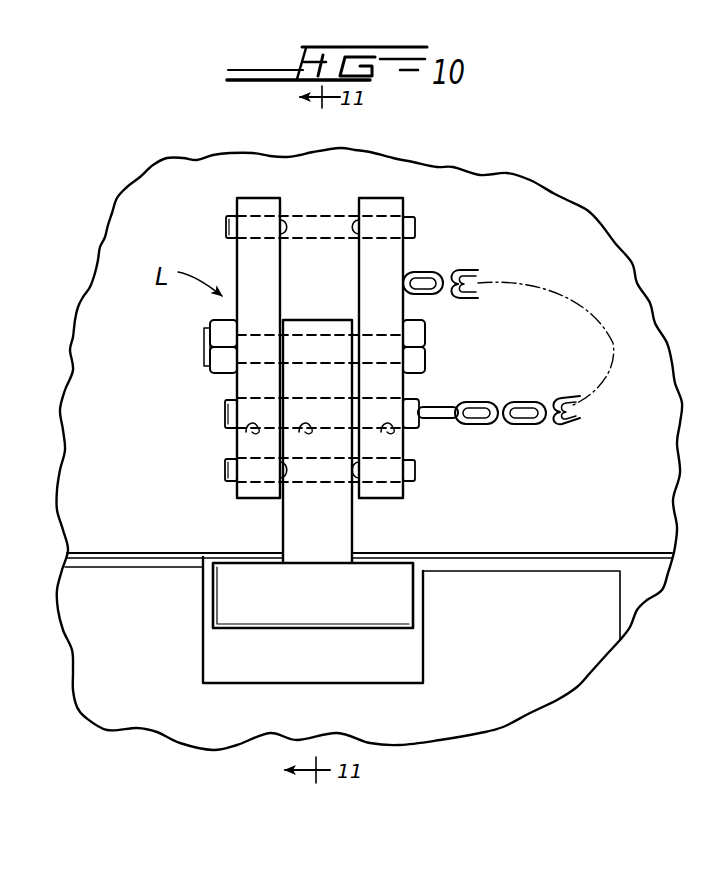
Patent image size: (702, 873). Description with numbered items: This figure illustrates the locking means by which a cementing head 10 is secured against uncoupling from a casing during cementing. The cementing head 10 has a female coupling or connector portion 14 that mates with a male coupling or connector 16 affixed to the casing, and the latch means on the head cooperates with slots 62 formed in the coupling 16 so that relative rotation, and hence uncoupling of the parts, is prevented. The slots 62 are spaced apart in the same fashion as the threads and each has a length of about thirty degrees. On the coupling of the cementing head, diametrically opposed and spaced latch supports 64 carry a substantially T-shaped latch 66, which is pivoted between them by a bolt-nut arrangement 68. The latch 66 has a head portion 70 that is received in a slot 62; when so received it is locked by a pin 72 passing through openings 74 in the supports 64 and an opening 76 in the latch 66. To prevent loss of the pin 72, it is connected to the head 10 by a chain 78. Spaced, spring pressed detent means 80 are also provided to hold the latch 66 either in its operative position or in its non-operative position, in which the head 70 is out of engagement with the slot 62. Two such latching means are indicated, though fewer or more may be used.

The cementing head 10 is at (566, 175).
The female coupling or connector portion 14 is at (620, 264).
The male coupling or connector 16 is at (570, 675).
The slots 62 is at (620, 604).
The latch supports 64 is at (383, 205).
The latch 66 is at (350, 537).
The bolt-nut arrangement 68 is at (418, 352).
The head portion 70 is at (392, 611).
The pin 72 is at (412, 399).
The openings 74 is at (240, 430).
The opening 76 is at (303, 432).
The chain 78 is at (533, 426).
The spring pressed detent means 80 is at (358, 228).